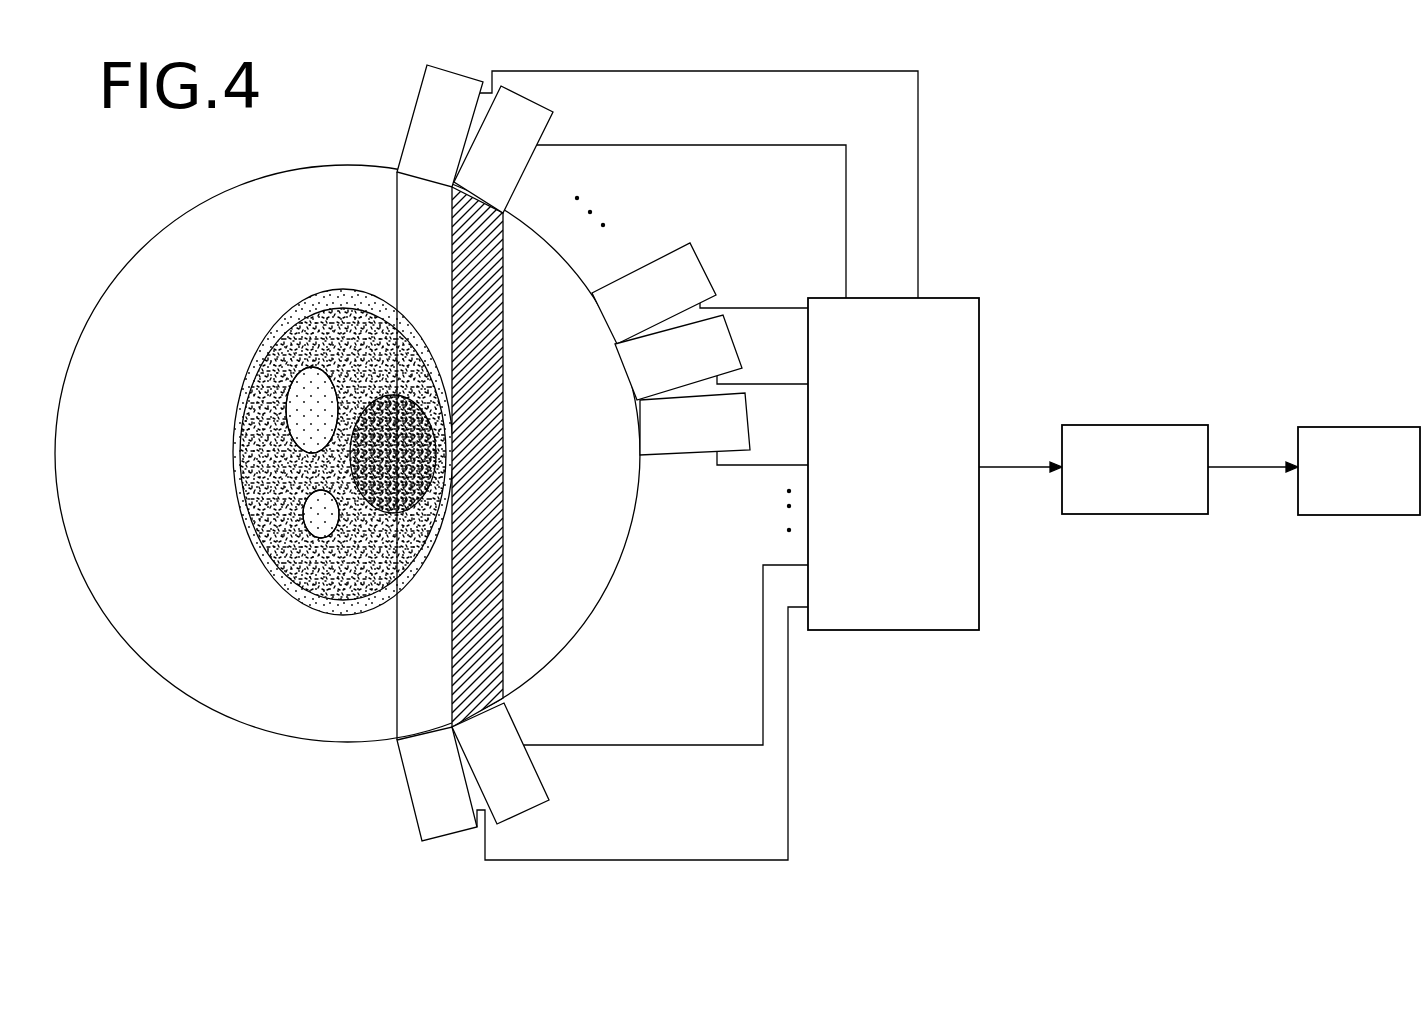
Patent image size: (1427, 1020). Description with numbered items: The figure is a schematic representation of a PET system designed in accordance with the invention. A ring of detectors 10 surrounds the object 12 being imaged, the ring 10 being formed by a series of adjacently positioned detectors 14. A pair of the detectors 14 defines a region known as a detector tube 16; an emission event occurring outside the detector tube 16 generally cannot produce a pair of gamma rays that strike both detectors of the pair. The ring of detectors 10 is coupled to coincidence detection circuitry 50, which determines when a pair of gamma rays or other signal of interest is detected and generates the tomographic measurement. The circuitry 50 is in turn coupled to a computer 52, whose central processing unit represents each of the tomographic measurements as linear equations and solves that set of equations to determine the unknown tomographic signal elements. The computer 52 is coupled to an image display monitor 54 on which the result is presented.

The ring of detectors 10 is at (420, 838).
The object 12 is at (238, 490).
The detectors 14 is at (427, 95).
The detector tube 16 is at (503, 520).
The coincidence detection circuitry 50 is at (948, 298).
The computer 52 is at (1155, 425).
The image display monitor 54 is at (1337, 427).